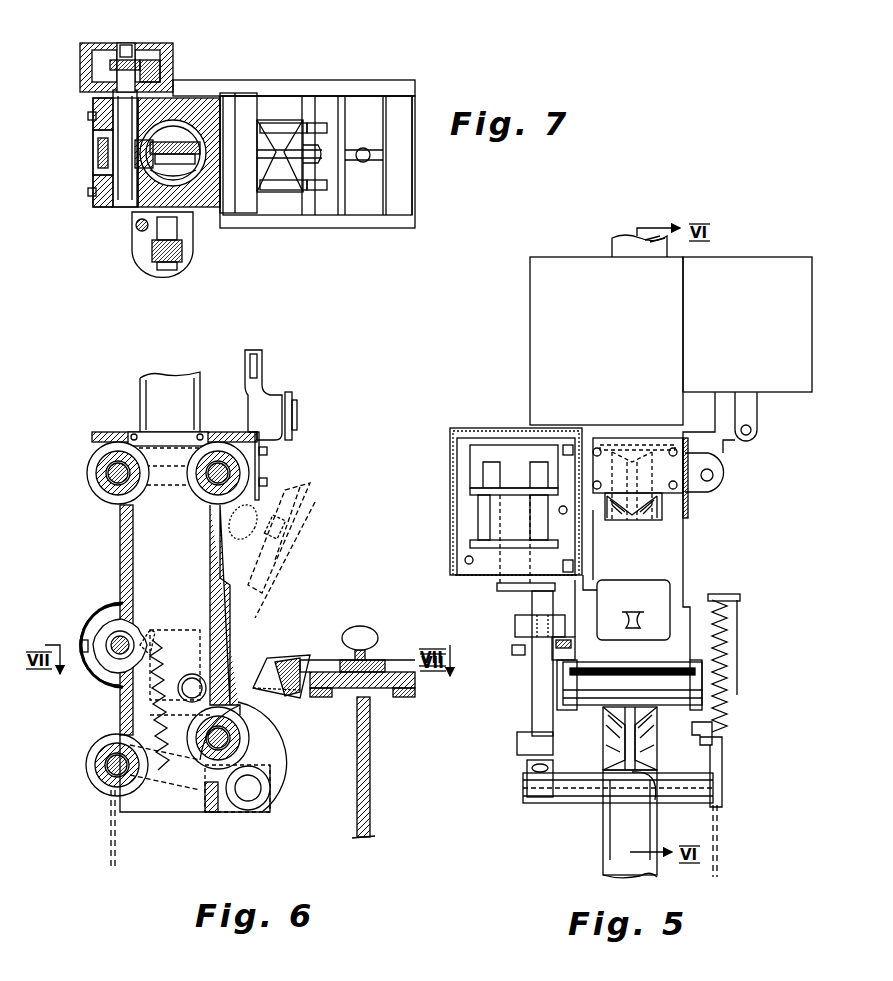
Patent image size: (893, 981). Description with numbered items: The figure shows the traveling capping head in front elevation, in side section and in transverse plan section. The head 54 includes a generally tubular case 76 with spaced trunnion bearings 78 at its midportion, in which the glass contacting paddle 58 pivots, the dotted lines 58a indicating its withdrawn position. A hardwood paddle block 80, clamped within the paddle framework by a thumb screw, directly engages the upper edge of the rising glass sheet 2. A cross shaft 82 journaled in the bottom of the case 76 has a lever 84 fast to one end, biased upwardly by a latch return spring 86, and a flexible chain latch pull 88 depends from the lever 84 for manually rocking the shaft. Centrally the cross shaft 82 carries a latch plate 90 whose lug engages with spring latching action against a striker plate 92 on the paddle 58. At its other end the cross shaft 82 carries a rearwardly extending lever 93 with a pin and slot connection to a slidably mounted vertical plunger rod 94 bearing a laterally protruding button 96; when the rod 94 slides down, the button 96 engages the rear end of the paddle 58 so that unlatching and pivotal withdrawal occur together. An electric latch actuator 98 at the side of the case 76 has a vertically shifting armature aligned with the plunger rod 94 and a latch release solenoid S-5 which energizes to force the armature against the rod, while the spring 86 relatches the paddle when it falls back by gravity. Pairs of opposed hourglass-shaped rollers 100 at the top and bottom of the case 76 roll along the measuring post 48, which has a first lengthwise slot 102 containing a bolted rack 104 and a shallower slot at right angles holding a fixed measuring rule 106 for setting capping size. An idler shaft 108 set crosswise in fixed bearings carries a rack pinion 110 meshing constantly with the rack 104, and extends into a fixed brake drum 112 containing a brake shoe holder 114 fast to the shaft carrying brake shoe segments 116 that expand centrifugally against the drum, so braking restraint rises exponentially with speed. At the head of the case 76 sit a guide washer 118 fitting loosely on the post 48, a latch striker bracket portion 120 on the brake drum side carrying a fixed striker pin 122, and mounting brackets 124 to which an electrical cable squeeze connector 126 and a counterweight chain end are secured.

In FIG. 6, the glass sheet 2 is at (371, 765).
In FIG. 7, the measuring post 48 is at (202, 125).
In FIG. 6, the measuring post 48 is at (200, 386).
In FIG. 5, the measuring post 48 is at (603, 856).
In FIG. 7, the head 54 is at (315, 71).
In FIG. 6, the head 54 is at (120, 540).
In FIG. 5, the head 54 is at (722, 573).
In FIG. 7, the glass contacting paddle 58 is at (325, 228).
In FIG. 6, the glass contacting paddle 58 is at (325, 660).
In FIG. 6, the withdrawn position of paddle 58a is at (306, 498).
In FIG. 7, the tubular case 76 is at (233, 197).
In FIG. 6, the tubular case 76 is at (215, 587).
In FIG. 5, the tubular case 76 is at (684, 545).
In FIG. 6, the trunnion bearings 78 is at (198, 682).
In FIG. 7, the paddle block 80 is at (412, 200).
In FIG. 6, the paddle block 80 is at (383, 690).
In FIG. 6, the cross shaft 82 is at (253, 791).
In FIG. 5, the cross shaft 82 is at (566, 802).
In FIG. 6, the lever 84 is at (196, 800).
In FIG. 5, the lever 84 is at (724, 785).
In FIG. 6, the latch return spring 86 is at (120, 720).
In FIG. 5, the latch return spring 86 is at (726, 722).
In FIG. 6, the latch pull 88 is at (109, 835).
In FIG. 5, the latch pull 88 is at (719, 848).
In FIG. 6, the latch plate 90 is at (294, 752).
In FIG. 5, the latch plate 90 is at (640, 797).
In FIG. 6, the striker plate 92 is at (300, 660).
In FIG. 5, the rearwardly extending lever 93 is at (527, 775).
In FIG. 7, the plunger rod 94 is at (160, 243).
In FIG. 5, the plunger rod 94 is at (535, 605).
In FIG. 7, the button 96 is at (140, 228).
In FIG. 5, the button 96 is at (563, 666).
In FIG. 5, the electric latch actuator 98 is at (497, 586).
In FIG. 7, the hourglass-shaped rollers 100 is at (243, 130).
In FIG. 6, the hourglass-shaped rollers 100 is at (90, 470).
In FIG. 5, the hourglass-shaped rollers 100 is at (612, 515).
In FIG. 7, the first lengthwise extending slot 102 is at (156, 175).
In FIG. 7, the rack 104 is at (173, 152).
In FIG. 6, the rack 104 is at (160, 614).
In FIG. 7, the measuring rule 106 is at (228, 210).
In FIG. 7, the idler shaft 108 is at (95, 105).
In FIG. 7, the rack pinion 110 is at (96, 150).
In FIG. 6, the rack pinion 110 is at (136, 615).
In FIG. 7, the brake drum 112 is at (80, 55).
In FIG. 6, the brake drum 112 is at (85, 625).
In FIG. 5, the brake drum 112 is at (738, 672).
In FIG. 7, the brake shoe holder 114 is at (143, 52).
In FIG. 7, the brake shoe segments 116 is at (165, 60).
In FIG. 6, the guide washer 118 is at (202, 432).
In FIG. 5, the guide washer 118 is at (600, 438).
In FIG. 6, the latch striker bracket portion 120 is at (145, 432).
In FIG. 5, the latch striker bracket portion 120 is at (716, 468).
In FIG. 6, the striker pin 122 is at (168, 455).
In FIG. 5, the striker pin 122 is at (713, 478).
In FIG. 6, the mounting brackets 124 is at (265, 470).
In FIG. 6, the electrical cable squeeze connector 126 is at (275, 372).
In FIG. 5, the latch release solenoid S-5 is at (475, 521).